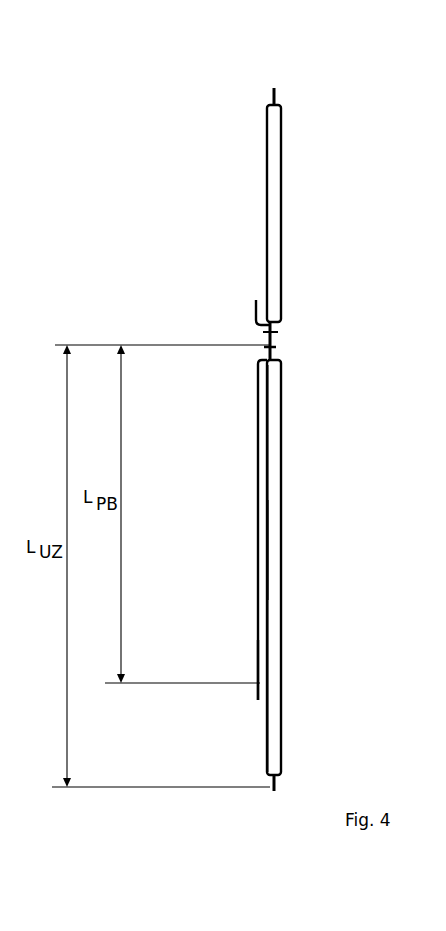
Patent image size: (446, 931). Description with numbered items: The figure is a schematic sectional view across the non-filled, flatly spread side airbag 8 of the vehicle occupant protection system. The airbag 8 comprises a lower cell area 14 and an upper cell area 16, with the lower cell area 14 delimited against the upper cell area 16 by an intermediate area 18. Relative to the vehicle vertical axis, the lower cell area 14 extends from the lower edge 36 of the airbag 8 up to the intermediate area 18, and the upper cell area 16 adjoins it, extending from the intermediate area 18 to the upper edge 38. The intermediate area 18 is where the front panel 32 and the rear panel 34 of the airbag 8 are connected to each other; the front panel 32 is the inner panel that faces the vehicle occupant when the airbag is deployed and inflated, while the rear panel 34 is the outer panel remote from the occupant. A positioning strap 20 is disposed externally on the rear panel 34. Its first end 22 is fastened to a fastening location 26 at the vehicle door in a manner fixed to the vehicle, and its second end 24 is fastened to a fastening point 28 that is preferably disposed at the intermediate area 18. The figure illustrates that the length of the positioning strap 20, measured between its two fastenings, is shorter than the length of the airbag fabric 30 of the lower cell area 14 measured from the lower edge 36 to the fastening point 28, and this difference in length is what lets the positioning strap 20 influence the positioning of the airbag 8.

The airbag 8 is at (243, 153).
The lower cell area 14 is at (278, 665).
The upper cell area 16 is at (272, 243).
The intermediate area 18 is at (268, 340).
The positioning strap 20 is at (258, 488).
The first end 22 is at (259, 698).
The second end 24 is at (254, 305).
The fastening location 26 is at (258, 680).
The fastening point 28 is at (272, 332).
The airbag fabric 30 is at (268, 568).
The front panel 32 is at (283, 198).
The rear panel 34 is at (265, 207).
The lower edge 36 is at (272, 791).
The upper edge 38 is at (275, 88).